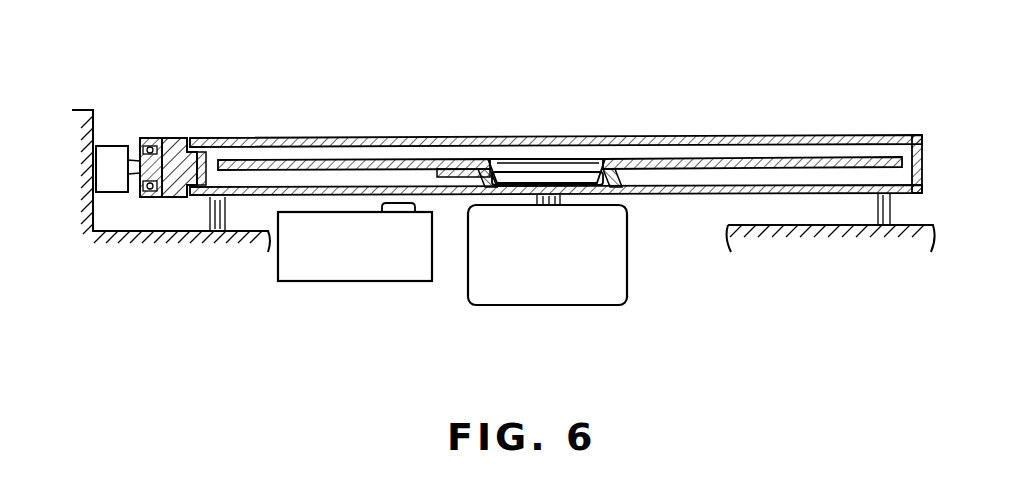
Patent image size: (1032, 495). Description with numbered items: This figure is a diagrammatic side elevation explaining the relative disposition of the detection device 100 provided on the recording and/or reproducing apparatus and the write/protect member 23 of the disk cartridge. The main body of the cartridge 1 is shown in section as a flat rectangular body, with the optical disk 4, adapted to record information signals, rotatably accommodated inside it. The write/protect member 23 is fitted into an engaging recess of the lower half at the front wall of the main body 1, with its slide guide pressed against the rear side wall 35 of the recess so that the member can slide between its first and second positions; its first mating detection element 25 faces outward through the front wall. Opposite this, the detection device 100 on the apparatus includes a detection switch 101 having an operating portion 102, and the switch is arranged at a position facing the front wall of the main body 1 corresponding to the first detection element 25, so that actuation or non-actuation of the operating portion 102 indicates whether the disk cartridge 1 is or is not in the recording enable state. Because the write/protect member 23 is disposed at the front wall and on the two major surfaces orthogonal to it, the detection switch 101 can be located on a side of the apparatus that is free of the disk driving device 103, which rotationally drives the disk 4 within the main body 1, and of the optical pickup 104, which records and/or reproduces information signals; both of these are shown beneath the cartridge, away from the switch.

The main body of the cartridge 1 is at (888, 137).
The optical disk 4 is at (718, 165).
The write/protect member 23 is at (177, 137).
The first mating detection element 25 is at (140, 185).
The rear side wall 35 is at (222, 150).
The detection device 100 is at (127, 128).
The detection switch 101 is at (112, 178).
The operating portion 102 is at (135, 137).
The disk driving device 103 is at (648, 259).
The optical pickup 104 is at (347, 281).